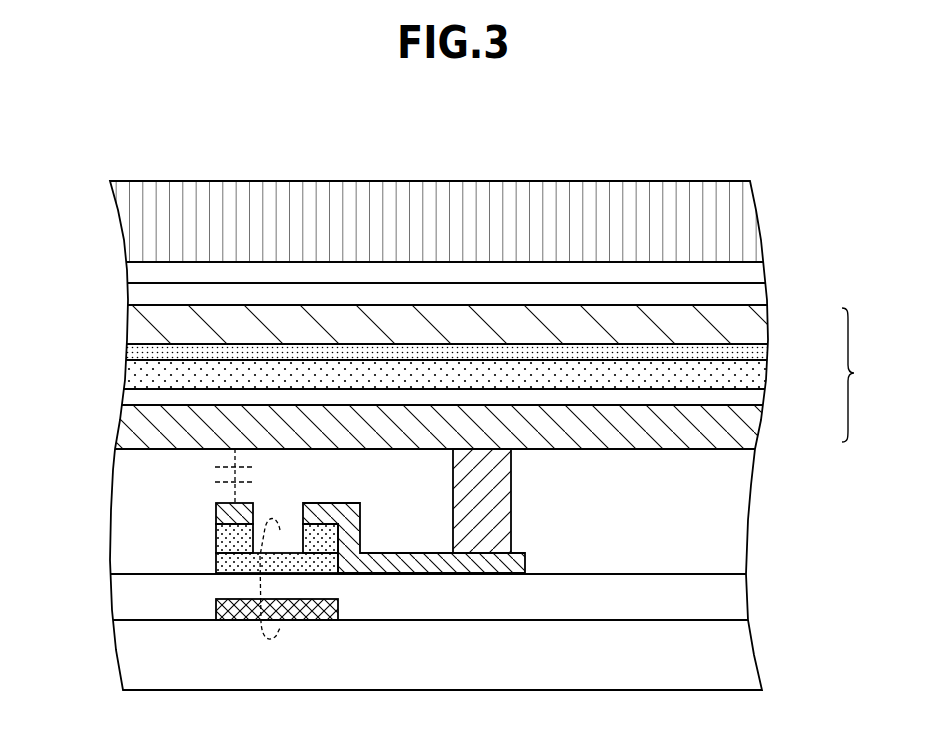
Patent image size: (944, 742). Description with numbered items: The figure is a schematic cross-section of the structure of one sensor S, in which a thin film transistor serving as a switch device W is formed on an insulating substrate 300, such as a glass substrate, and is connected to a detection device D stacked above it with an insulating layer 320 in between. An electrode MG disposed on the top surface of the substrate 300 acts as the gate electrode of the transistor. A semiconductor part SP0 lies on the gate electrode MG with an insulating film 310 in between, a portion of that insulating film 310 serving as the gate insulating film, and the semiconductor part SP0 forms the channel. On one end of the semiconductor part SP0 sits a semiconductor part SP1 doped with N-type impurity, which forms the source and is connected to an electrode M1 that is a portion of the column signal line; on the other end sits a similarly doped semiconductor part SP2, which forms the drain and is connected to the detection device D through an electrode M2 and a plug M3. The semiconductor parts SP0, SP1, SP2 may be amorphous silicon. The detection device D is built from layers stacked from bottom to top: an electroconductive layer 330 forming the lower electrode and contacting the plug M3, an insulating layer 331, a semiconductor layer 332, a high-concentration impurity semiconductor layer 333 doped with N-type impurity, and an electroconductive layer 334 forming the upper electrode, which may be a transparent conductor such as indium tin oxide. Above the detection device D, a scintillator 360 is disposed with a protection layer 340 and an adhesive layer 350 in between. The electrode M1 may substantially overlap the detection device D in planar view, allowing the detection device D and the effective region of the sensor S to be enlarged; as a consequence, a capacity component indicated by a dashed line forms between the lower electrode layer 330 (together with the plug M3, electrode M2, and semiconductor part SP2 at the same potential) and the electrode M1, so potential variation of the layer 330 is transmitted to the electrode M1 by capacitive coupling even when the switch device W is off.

The sensor S is at (644, 132).
The insulating substrate 300 is at (745, 660).
The insulating film 310 is at (740, 595).
The insulating layer 320 is at (737, 520).
The electroconductive layer 330 is at (735, 432).
The insulating layer 331 is at (757, 406).
The semiconductor layer 332 is at (758, 380).
The high-concentration impurity semiconductor layer 333 is at (756, 357).
The electroconductive layer 334 is at (750, 328).
The protection layer 340 is at (758, 299).
The adhesive layer 350 is at (755, 276).
The scintillator 360 is at (749, 216).
The detection device D is at (859, 375).
The electrode M1 is at (216, 515).
The electrode M2 is at (525, 556).
The plug M3 is at (511, 505).
The gate electrode MG is at (216, 615).
The semiconductor part SP0 is at (216, 568).
The semiconductor part SP1 is at (216, 543).
The semiconductor part SP2 is at (303, 540).
The switch device W is at (268, 642).